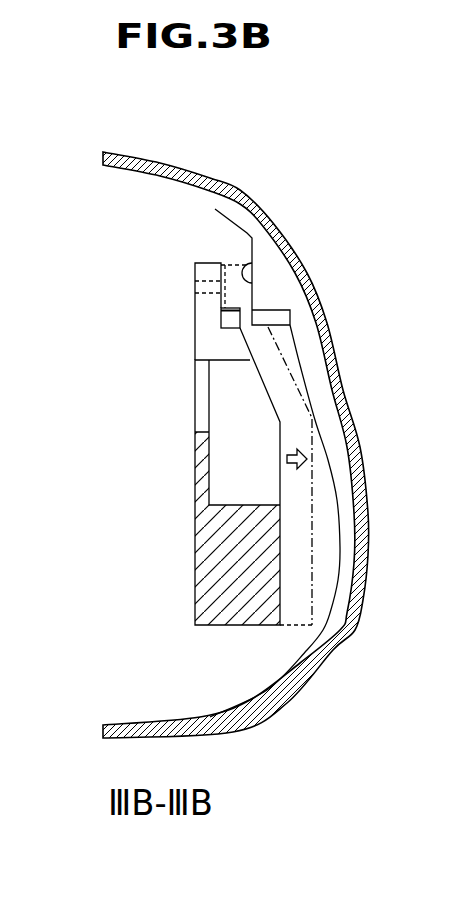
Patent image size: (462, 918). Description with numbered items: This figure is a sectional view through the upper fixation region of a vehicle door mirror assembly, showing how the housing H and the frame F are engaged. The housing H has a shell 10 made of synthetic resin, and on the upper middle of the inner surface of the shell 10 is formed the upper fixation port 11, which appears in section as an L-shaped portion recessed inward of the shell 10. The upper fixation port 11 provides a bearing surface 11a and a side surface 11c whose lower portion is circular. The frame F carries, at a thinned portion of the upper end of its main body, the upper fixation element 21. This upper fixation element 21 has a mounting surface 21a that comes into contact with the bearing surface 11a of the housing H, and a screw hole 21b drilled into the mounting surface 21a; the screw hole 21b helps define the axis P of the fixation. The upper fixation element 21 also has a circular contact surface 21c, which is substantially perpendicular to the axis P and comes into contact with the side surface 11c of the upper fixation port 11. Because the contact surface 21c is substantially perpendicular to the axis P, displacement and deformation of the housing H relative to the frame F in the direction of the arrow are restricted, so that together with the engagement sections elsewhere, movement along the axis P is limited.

The shell 10 is at (253, 190).
The upper fixation port 11 is at (260, 320).
The bearing surface 11a is at (247, 263).
The side surface 11c is at (292, 316).
The upper fixation element 21 is at (172, 272).
The mounting surface 21a is at (231, 265).
The screw hole 21b is at (193, 287).
The contact surface 21c is at (225, 318).
The frame F is at (175, 485).
The door mirror housing H is at (255, 755).